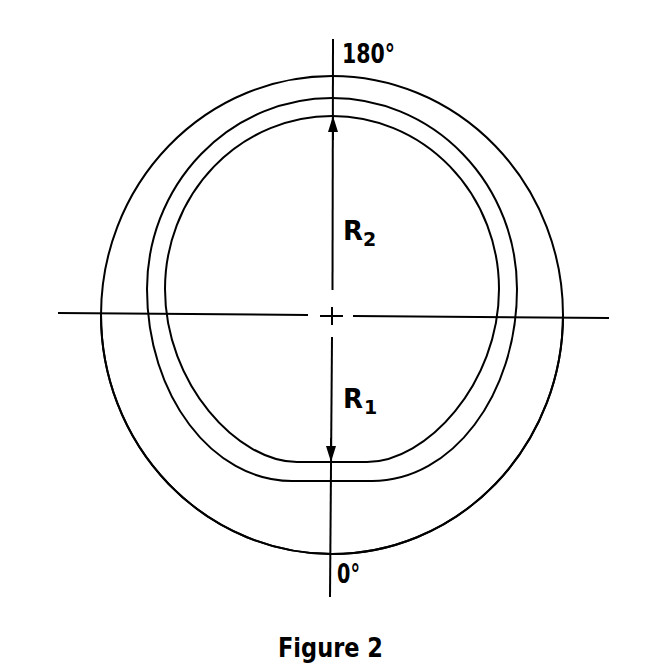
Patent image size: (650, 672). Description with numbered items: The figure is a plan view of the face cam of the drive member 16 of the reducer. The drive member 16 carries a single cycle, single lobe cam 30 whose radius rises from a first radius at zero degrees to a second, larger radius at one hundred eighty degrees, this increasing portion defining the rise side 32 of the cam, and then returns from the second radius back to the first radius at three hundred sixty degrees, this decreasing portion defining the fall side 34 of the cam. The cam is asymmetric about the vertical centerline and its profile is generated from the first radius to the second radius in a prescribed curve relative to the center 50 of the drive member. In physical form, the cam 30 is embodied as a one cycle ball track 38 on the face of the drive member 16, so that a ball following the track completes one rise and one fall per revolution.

The drive member 16 is at (318, 297).
The single cycle cam 30 is at (227, 485).
The rise side 32 is at (170, 425).
The fall side 34 is at (468, 457).
The one cycle ball track 38 is at (475, 177).
The center 50 is at (330, 312).